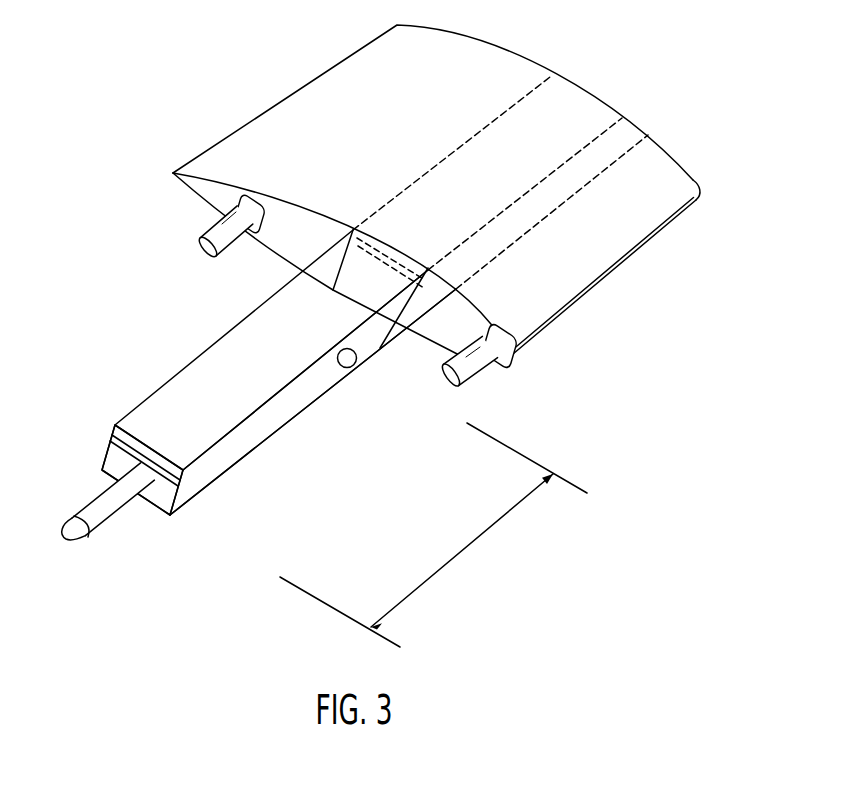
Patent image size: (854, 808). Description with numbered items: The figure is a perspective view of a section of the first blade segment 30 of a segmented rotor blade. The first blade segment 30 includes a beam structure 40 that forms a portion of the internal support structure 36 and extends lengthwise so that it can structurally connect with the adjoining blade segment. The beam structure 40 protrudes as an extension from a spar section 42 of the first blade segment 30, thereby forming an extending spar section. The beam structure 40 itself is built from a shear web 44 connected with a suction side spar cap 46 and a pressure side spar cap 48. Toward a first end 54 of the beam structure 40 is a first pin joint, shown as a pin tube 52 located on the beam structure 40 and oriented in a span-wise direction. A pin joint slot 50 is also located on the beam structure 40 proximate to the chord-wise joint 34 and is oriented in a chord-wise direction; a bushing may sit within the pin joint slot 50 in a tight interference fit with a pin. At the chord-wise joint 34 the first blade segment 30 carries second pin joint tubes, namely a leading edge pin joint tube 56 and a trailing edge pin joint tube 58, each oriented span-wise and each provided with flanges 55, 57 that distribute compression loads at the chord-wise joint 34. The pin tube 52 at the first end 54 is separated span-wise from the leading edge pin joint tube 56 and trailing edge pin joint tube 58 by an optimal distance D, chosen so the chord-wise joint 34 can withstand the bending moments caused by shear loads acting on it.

The first blade segment 30 is at (277, 107).
The chord-wise joint 34 is at (207, 200).
The internal support structure 36 is at (283, 445).
The beam structure 40 is at (147, 413).
The spar section 42 is at (584, 98).
The shear web 44 is at (330, 388).
The suction side spar cap 46 is at (347, 313).
The pressure side spar cap 48 is at (384, 252).
The pin joint slot 50 is at (357, 360).
The pin tube 52 is at (118, 518).
The first end 54 is at (197, 509).
The flanges 55 is at (500, 328).
The leading edge pin joint tube 56 is at (452, 380).
The flanges 57 is at (254, 207).
The trailing edge pin joint tube 58 is at (209, 251).
The optimal distance D is at (433, 535).